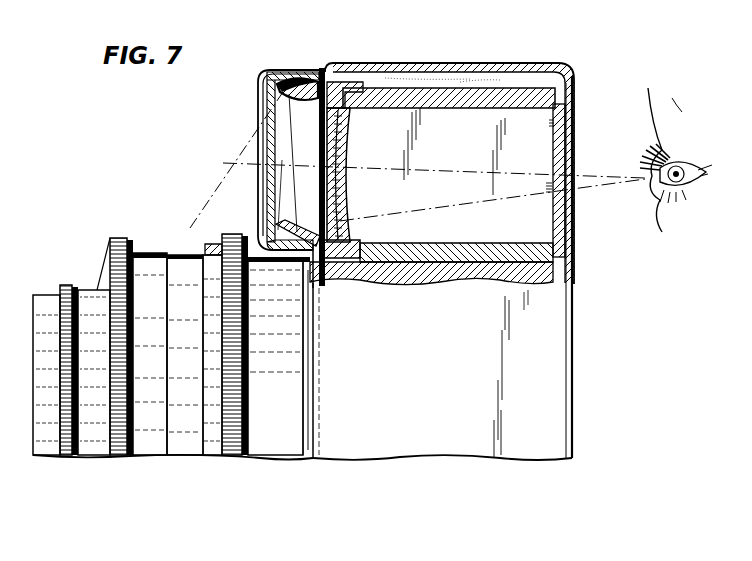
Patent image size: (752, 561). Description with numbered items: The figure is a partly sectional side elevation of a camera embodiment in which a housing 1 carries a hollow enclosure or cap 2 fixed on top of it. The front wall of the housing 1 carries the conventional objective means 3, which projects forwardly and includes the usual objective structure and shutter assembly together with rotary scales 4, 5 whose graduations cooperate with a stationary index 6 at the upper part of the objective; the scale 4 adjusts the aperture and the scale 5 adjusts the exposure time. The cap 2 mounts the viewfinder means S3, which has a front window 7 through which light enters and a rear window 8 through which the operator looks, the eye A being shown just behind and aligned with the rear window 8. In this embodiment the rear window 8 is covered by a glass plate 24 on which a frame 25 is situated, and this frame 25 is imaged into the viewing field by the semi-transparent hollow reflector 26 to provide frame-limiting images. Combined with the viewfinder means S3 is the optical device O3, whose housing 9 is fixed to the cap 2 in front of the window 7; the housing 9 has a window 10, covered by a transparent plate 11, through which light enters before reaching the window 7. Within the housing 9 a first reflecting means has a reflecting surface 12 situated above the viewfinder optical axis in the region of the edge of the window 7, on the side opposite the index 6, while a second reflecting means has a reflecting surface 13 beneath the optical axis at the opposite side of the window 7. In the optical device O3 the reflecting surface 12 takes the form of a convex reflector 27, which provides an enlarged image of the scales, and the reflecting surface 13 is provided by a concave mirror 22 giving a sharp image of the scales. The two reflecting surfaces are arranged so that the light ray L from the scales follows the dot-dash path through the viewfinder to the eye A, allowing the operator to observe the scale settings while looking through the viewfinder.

The housing 1 is at (540, 337).
The hollow enclosure or cap 2 is at (397, 66).
The objective means 3 is at (80, 458).
The rotary scale 4 is at (150, 448).
The rotary scale 5 is at (189, 448).
The stationary index 6 is at (211, 250).
The front window 7 is at (332, 146).
The rear window 8 is at (572, 160).
The housing 9 is at (274, 70).
The window 10 is at (260, 100).
The transparent plate 11 is at (272, 112).
The reflecting surface 12 is at (275, 102).
The reflecting surface 13 is at (286, 214).
The concave mirror 22 is at (283, 230).
The glass plate 24 is at (566, 118).
The frame 25 is at (548, 182).
The semi-transparent hollow reflector 26 is at (343, 193).
The convex reflector 27 is at (308, 86).
The optical device O3 is at (299, 68).
The viewfinder means S3 is at (447, 78).
The light ray L is at (182, 232).
The eye A is at (642, 186).